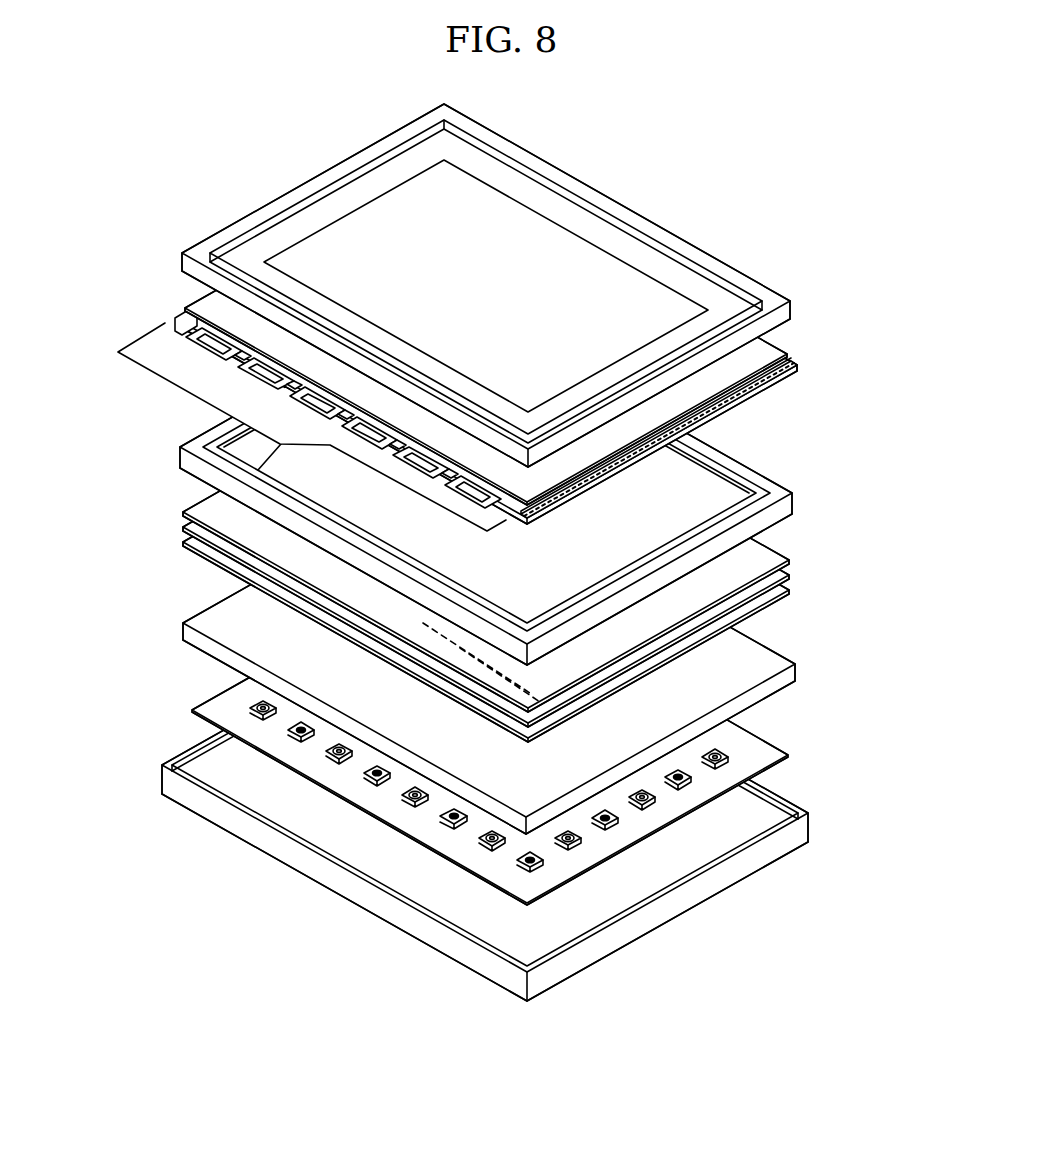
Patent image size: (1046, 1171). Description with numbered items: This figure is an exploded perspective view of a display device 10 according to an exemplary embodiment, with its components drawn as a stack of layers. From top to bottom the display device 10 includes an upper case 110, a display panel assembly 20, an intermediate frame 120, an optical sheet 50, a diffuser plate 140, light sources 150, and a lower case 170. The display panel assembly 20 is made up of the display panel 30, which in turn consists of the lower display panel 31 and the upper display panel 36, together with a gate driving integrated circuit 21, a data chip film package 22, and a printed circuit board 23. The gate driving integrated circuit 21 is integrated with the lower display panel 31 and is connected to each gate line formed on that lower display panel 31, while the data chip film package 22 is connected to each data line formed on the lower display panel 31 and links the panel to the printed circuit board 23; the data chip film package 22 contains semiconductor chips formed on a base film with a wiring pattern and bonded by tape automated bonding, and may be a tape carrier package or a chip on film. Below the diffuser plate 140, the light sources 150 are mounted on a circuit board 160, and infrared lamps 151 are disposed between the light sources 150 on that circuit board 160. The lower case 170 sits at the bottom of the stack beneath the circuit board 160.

The display device 10 is at (738, 109).
The display panel assembly 20 is at (500, 345).
The gate driving integrated circuit 21 is at (748, 407).
The data chip film package 22 is at (190, 318).
The printed circuit board 23 is at (118, 352).
The display panel 30 is at (542, 342).
The lower display panel 31 is at (797, 364).
The upper display panel 36 is at (758, 342).
The optical sheet 50 is at (798, 562).
The upper case 110 is at (753, 289).
The intermediate frame 120 is at (785, 508).
The diffuser plate 140 is at (178, 603).
The light sources 150 is at (336, 752).
The infrared lamps 151 is at (375, 773).
The circuit board 160 is at (195, 711).
The lower case 170 is at (167, 780).